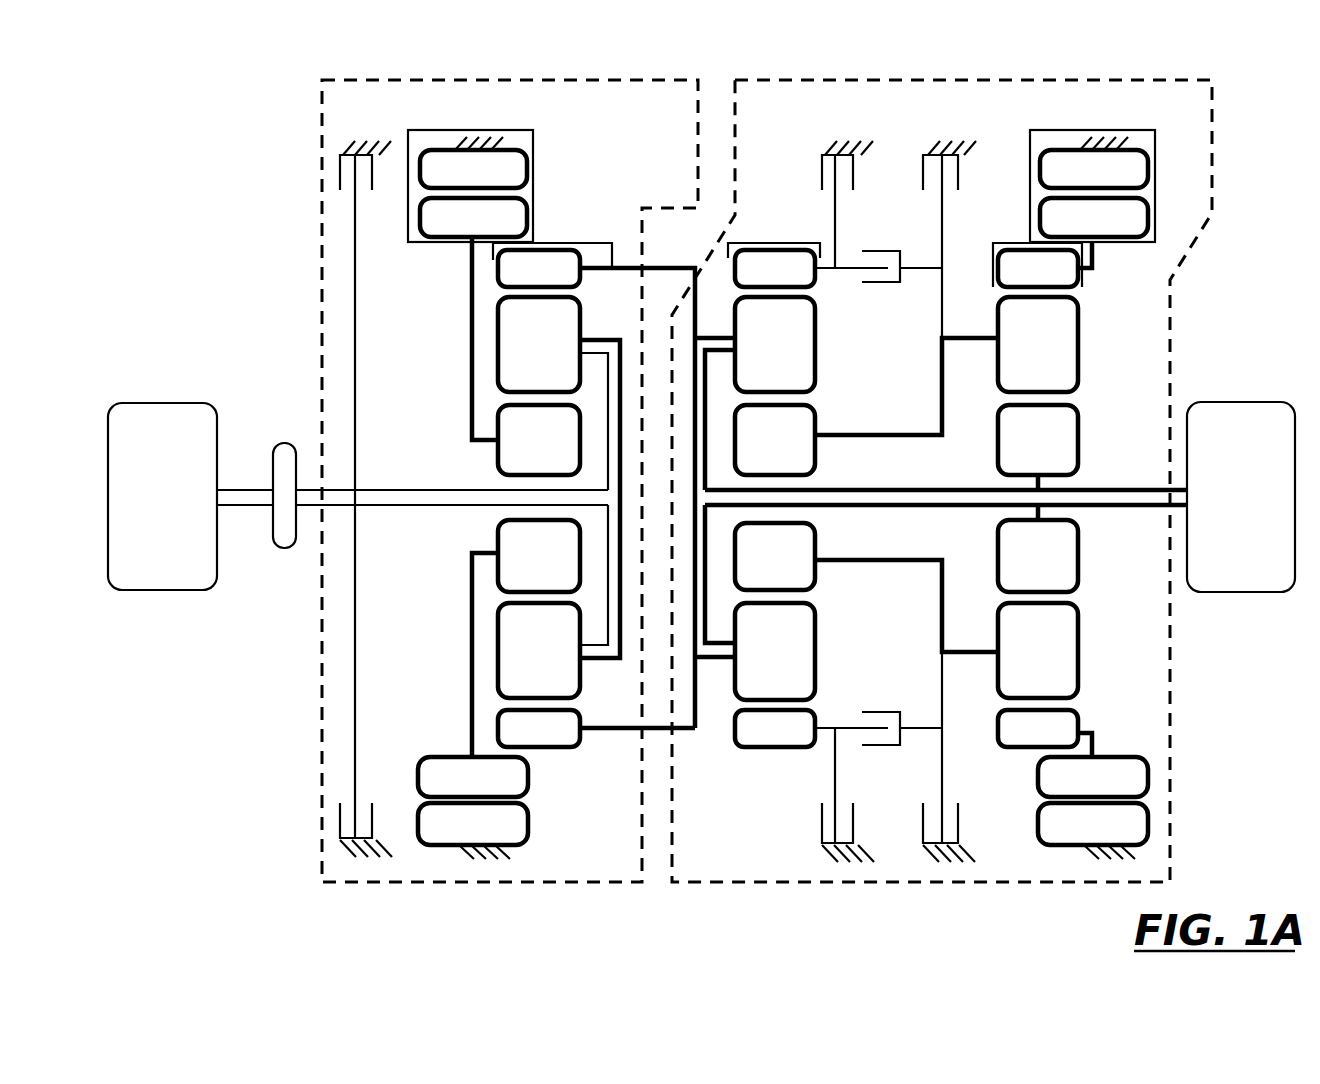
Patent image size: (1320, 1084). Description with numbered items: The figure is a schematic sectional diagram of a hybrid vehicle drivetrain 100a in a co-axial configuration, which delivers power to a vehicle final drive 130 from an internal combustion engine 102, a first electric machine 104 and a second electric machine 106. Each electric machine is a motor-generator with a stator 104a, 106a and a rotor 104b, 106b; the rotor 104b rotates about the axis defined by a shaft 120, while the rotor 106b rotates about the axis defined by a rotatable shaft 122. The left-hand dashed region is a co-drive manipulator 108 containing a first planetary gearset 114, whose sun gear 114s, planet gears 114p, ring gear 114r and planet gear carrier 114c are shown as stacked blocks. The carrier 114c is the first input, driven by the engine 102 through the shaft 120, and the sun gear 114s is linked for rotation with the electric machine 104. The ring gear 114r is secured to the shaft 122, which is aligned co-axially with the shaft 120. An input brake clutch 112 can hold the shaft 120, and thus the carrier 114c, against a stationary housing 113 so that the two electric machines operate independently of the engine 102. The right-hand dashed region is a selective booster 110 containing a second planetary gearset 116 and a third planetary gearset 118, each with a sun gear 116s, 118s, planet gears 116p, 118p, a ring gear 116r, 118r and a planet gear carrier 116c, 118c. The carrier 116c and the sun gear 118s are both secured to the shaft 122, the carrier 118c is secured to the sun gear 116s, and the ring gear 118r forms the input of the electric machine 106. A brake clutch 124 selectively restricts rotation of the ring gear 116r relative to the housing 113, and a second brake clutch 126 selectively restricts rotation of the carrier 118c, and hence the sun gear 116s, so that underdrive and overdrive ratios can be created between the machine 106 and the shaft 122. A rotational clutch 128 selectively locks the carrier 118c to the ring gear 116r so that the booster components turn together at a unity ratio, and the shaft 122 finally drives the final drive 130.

The vehicle drivetrain 100a is at (184, 116).
The internal combustion engine 102 is at (162, 473).
The first electric machine 104 is at (510, 486).
The stator 104a is at (468, 143).
The rotor 104b is at (485, 269).
The second electric machine 106 is at (1120, 494).
The stator 106a is at (1091, 143).
The rotor 106b is at (1106, 168).
The co-drive manipulator 108 is at (510, 464).
The selective booster 110 is at (942, 464).
The input brake clutch 112 is at (322, 499).
The stationary housing 113 is at (493, 59).
The first planetary gearset 114 is at (552, 219).
The planet gear carrier 114c is at (611, 477).
The planet gears 114p is at (502, 497).
The ring gear 114r is at (545, 498).
The sun gear 114s is at (488, 581).
The second planetary gearset 116 is at (774, 214).
The planet gear carrier 116c is at (657, 477).
The planet gears 116p is at (819, 498).
The ring gear 116r is at (818, 498).
The sun gear 116s is at (818, 500).
The third planetary gearset 118 is at (1032, 229).
The planet gear carrier 118c is at (906, 473).
The planet gears 118p is at (1078, 497).
The ring gear 118r is at (1076, 499).
The sun gear 118s is at (1077, 504).
The shaft 120 is at (412, 495).
The rotatable shaft 122 is at (946, 520).
The brake clutch 124 is at (848, 475).
The second brake clutch 126 is at (949, 475).
The rotational clutch 128 is at (878, 470).
The final drive 130 is at (1241, 473).